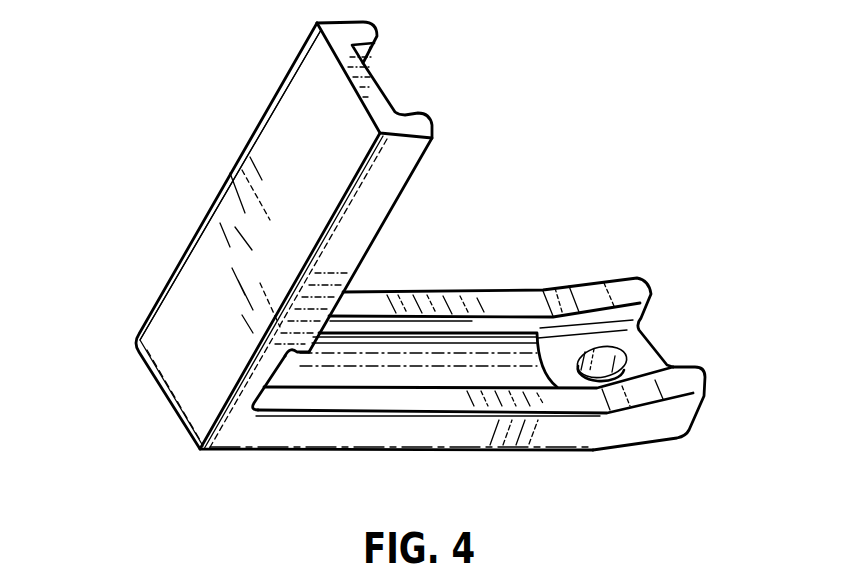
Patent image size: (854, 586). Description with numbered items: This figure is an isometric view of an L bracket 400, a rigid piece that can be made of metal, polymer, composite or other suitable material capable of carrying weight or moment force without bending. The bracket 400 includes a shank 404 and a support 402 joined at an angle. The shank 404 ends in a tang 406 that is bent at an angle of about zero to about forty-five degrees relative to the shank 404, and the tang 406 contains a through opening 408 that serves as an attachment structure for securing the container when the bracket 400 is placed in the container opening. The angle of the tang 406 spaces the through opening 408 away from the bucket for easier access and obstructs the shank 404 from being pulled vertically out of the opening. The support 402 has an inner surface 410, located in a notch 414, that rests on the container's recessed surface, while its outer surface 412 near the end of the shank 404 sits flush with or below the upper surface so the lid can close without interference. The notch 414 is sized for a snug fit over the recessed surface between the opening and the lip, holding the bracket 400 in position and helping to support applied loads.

The L bracket 400 is at (312, 236).
The support 402 is at (247, 223).
The shank 404 is at (468, 354).
The tang 406 is at (598, 318).
The through opening 408 is at (613, 368).
The inner surface 410 is at (260, 393).
The outer surface 412 is at (160, 345).
The notch 414 is at (286, 359).